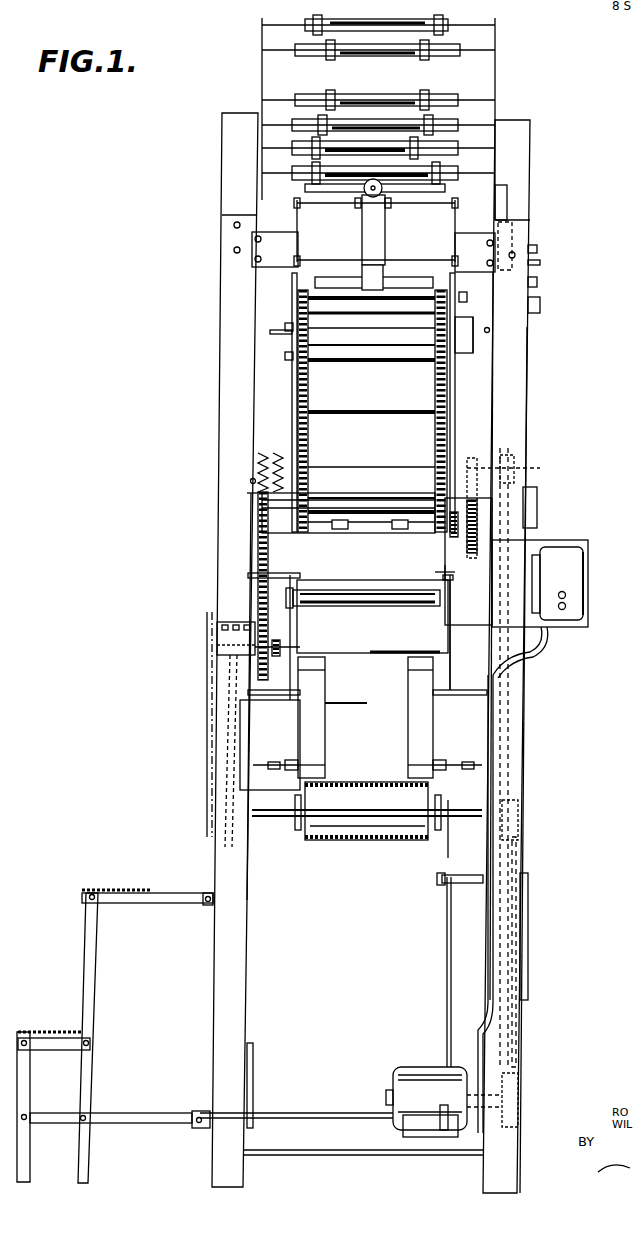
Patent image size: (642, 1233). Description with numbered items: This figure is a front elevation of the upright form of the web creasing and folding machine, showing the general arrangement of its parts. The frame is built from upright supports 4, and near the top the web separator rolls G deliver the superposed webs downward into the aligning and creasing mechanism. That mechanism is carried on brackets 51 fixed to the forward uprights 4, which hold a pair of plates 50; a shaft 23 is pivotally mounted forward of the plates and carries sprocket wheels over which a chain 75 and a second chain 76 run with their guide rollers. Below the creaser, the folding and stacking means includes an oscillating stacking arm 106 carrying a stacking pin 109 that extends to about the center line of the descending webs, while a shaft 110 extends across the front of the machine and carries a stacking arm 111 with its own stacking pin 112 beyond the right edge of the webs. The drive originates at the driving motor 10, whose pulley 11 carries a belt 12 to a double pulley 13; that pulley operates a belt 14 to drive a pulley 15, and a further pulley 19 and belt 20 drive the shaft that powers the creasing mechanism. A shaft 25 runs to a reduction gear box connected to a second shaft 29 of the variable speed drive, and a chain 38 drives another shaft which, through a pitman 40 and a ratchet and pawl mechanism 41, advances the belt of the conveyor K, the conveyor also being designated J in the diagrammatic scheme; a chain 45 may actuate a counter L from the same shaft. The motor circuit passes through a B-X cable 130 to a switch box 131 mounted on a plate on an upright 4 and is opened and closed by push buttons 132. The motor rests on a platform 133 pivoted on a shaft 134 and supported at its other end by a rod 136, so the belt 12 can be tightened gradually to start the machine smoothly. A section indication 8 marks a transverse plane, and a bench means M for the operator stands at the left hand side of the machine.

The upright support 4 is at (223, 514).
The section line 8 is at (432, 256).
The driving motor 10 is at (205, 628).
The pulley 11 is at (518, 1076).
The belt 12 is at (515, 1019).
The double pulley 13 is at (522, 816).
The belt 14 is at (502, 696).
The pulley 15 is at (512, 469).
The pulley 19 is at (463, 544).
The belt 20 is at (466, 553).
The shaft 23 is at (372, 526).
The shaft 25 is at (342, 468).
The second shaft 29 is at (530, 364).
The chain 38 is at (270, 561).
The pitman 40 is at (237, 716).
The ratchet and pawl mechanism 41 is at (227, 868).
The chain 45 is at (280, 646).
The plates 50 is at (298, 401).
The brackets 51 is at (250, 434).
The chain 75 is at (437, 391).
The chain 76 is at (310, 391).
The oscillating stacking arm 106 is at (292, 619).
The stacking pin 109 is at (338, 704).
The shaft 110 is at (374, 579).
The stacking arm 111 is at (449, 618).
The stacking pin 112 is at (374, 651).
The B-X cable 130 is at (547, 648).
The switch box 131 is at (568, 579).
The push buttons 132 is at (566, 596).
The platform 133 is at (417, 1138).
The shaft 134 is at (285, 1112).
The rod 136 is at (445, 969).
The web separator rolls G is at (300, 51).
The conveyor J is at (398, 754).
The conveyor K is at (322, 841).
The counter L is at (230, 620).
The bench means M is at (82, 880).